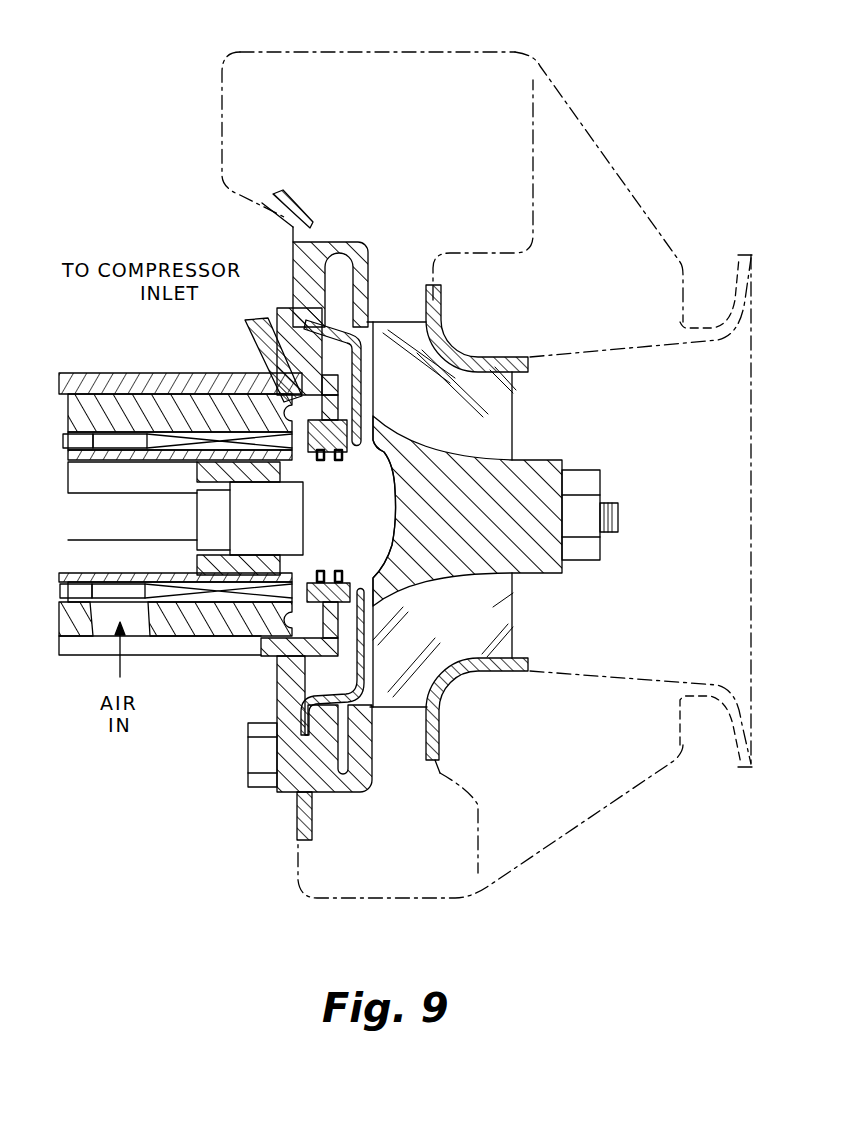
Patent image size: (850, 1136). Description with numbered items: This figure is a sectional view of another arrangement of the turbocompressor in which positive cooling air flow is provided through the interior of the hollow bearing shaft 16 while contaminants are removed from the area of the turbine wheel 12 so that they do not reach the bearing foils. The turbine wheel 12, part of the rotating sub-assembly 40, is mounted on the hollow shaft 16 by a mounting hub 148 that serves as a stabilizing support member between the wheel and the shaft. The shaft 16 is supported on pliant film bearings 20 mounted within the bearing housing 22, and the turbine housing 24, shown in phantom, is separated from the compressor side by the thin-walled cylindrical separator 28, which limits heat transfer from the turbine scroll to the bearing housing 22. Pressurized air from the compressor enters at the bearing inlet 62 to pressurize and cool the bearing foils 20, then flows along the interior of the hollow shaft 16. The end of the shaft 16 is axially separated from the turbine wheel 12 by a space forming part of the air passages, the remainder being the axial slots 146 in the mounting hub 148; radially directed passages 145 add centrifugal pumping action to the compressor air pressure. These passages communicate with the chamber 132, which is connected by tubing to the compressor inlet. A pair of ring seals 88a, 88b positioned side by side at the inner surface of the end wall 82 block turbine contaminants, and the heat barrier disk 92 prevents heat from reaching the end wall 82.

The turbine housing 24 is at (385, 50).
The thin-walled cylindrical separator 28 is at (80, 372).
The bearing housing 22 is at (100, 397).
The chamber 132 is at (305, 410).
The hollow shaft 16 is at (63, 463).
The slots 146 is at (193, 463).
The mounting hub 148 is at (197, 520).
The radially directed passages 145 is at (298, 455).
The ring seal 88a is at (322, 461).
The ring seal 88b is at (337, 571).
The heat barrier disk 92 is at (363, 378).
The end wall 82 is at (330, 410).
The turbine wheel 12 is at (505, 430).
The sub-assembly 40 is at (626, 467).
The opening 62 is at (103, 633).
The pliant film bearings 20 is at (217, 595).